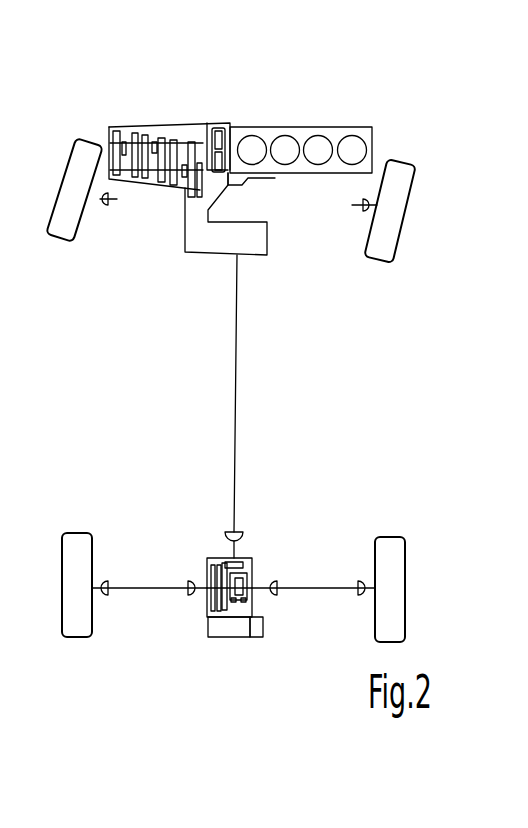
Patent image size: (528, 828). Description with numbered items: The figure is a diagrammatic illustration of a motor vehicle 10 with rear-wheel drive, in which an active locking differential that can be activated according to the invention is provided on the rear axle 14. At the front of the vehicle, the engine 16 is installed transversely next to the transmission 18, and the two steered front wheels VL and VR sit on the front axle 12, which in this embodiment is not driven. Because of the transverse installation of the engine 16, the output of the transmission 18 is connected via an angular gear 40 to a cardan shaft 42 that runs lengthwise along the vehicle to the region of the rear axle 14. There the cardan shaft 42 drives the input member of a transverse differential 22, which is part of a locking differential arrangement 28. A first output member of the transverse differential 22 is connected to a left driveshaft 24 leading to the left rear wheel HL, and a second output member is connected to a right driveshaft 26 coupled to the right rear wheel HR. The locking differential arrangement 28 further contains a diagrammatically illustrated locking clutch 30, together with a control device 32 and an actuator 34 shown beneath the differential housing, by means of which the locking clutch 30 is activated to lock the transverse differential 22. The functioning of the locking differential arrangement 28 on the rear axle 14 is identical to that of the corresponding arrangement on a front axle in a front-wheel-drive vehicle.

The motor vehicle 10 is at (342, 102).
The front axle 12 is at (434, 189).
The rear axle 14 is at (435, 570).
The engine 16 is at (303, 138).
The transmission 18 is at (194, 135).
The transverse differential 22 is at (254, 604).
The left driveshaft 24 is at (145, 585).
The right driveshaft 26 is at (318, 587).
The locking differential arrangement 28 is at (208, 543).
The locking clutch 30 is at (206, 606).
The control device 32 is at (258, 630).
The actuator 34 is at (225, 630).
The angular gear 40 is at (203, 255).
The cardan shaft 42 is at (237, 355).
The left front wheel VL is at (62, 235).
The right front wheel VR is at (388, 242).
The left rear wheel HL is at (72, 552).
The right rear wheel HR is at (392, 612).